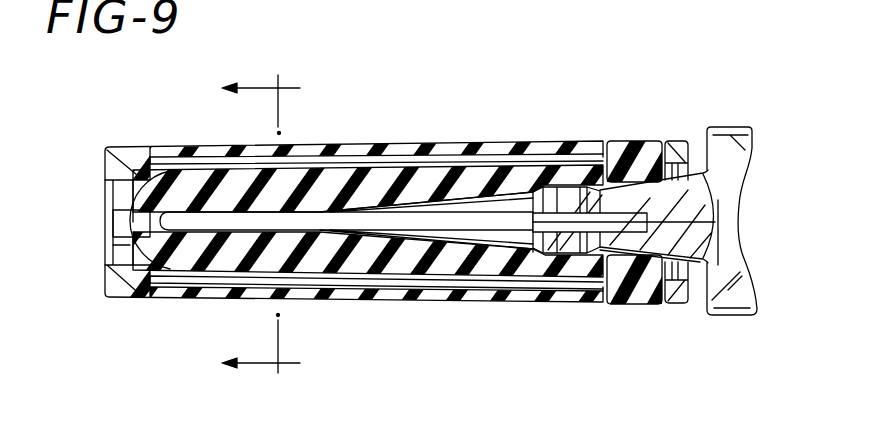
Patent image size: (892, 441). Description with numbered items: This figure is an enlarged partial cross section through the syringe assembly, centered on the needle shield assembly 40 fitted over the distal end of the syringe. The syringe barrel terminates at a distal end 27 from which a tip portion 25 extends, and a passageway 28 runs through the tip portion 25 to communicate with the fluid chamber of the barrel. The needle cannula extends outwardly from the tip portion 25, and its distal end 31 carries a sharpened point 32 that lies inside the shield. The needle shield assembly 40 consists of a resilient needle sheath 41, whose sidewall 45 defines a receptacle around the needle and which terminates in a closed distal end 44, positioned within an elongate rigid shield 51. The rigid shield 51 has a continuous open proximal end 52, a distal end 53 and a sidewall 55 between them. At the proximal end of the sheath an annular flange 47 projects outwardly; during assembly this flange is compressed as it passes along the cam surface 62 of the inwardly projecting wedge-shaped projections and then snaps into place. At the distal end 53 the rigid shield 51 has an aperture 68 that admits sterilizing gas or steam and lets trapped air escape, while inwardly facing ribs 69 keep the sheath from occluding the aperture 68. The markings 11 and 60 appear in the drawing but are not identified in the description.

The needle shield assembly 40 is at (482, 142).
The rigid shield 51 is at (323, 143).
The resilient needle sheath 41 is at (392, 277).
The sidewall 55 is at (407, 143).
The sidewall 45 is at (483, 270).
The distal end 53 is at (117, 147).
The closed distal end 44 is at (133, 200).
The aperture 68 is at (113, 220).
The inwardly facing ribs 69 is at (128, 240).
The sharpened point 32 is at (210, 228).
The distal end 31 is at (255, 216).
The tip portion 25 is at (540, 272).
The annular flange 47 is at (650, 153).
The continuous open proximal end 52 is at (687, 150).
The cam surface 62 is at (695, 280).
The passageway 28 is at (722, 172).
The distal end 27 is at (737, 312).
The section line 11 is at (261, 228).
The vent 60 is at (474, 0).